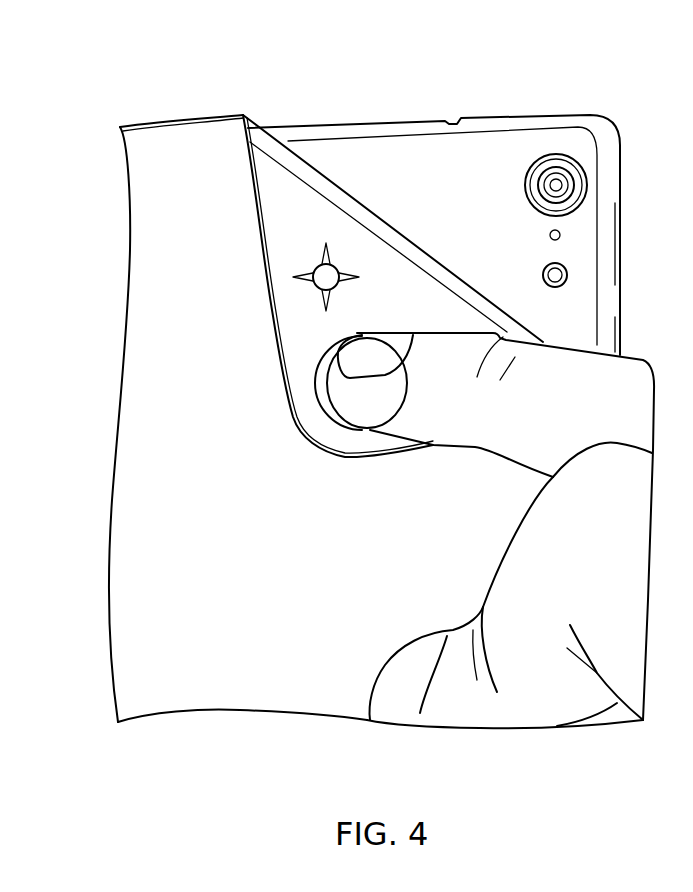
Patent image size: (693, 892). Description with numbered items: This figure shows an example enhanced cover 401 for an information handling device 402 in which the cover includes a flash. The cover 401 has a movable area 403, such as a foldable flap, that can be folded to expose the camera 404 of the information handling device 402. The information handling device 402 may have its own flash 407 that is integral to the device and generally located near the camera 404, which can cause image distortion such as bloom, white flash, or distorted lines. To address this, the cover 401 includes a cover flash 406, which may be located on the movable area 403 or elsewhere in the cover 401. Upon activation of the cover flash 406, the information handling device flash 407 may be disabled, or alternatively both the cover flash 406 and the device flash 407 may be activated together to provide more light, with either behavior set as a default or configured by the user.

The cover 401 is at (259, 381).
The information handling device 402 is at (434, 190).
The movable area 403 is at (393, 228).
The camera 404 is at (599, 170).
The cover flash 406 is at (345, 232).
The information handling device flash 407 is at (608, 258).